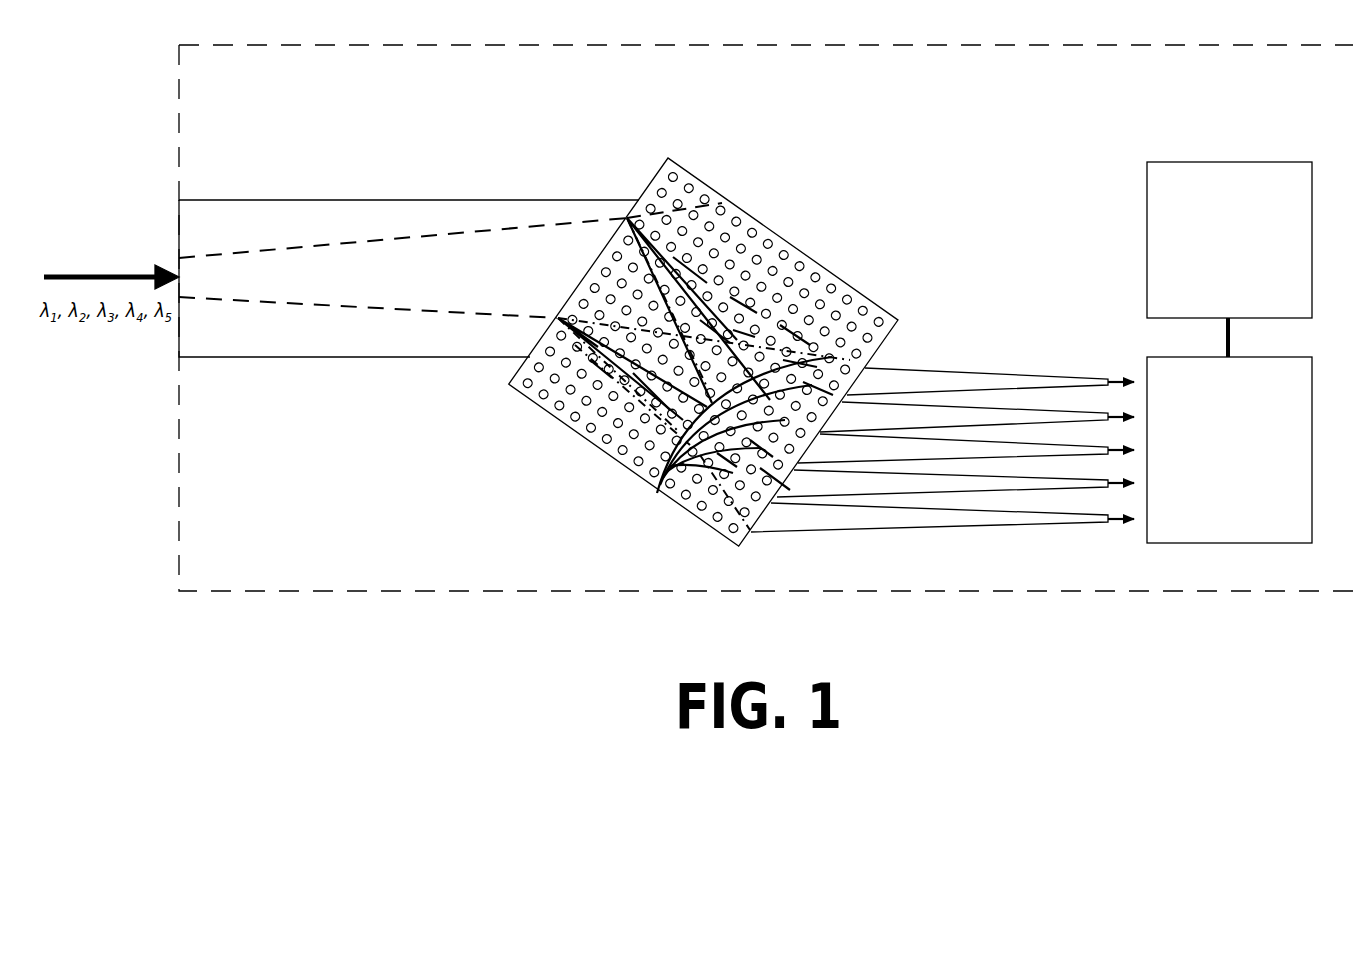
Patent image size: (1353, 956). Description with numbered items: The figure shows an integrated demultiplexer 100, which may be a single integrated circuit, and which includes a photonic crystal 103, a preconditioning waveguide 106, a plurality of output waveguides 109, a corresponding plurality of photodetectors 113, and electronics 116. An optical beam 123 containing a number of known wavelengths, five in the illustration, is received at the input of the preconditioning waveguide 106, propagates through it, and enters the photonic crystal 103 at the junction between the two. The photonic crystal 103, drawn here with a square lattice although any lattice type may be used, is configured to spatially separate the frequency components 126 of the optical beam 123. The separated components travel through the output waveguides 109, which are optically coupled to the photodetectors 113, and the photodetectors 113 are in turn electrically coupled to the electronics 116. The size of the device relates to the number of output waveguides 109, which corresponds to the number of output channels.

The integrated demultiplexer 100 is at (404, 131).
The photonic crystal 103 is at (857, 283).
The preconditioning waveguide 106 is at (318, 358).
The output waveguides 109 is at (942, 532).
The photodetectors 113 is at (1225, 492).
The electronics 116 is at (1207, 267).
The optical beam 123 is at (120, 272).
The frequency components 126 is at (657, 493).